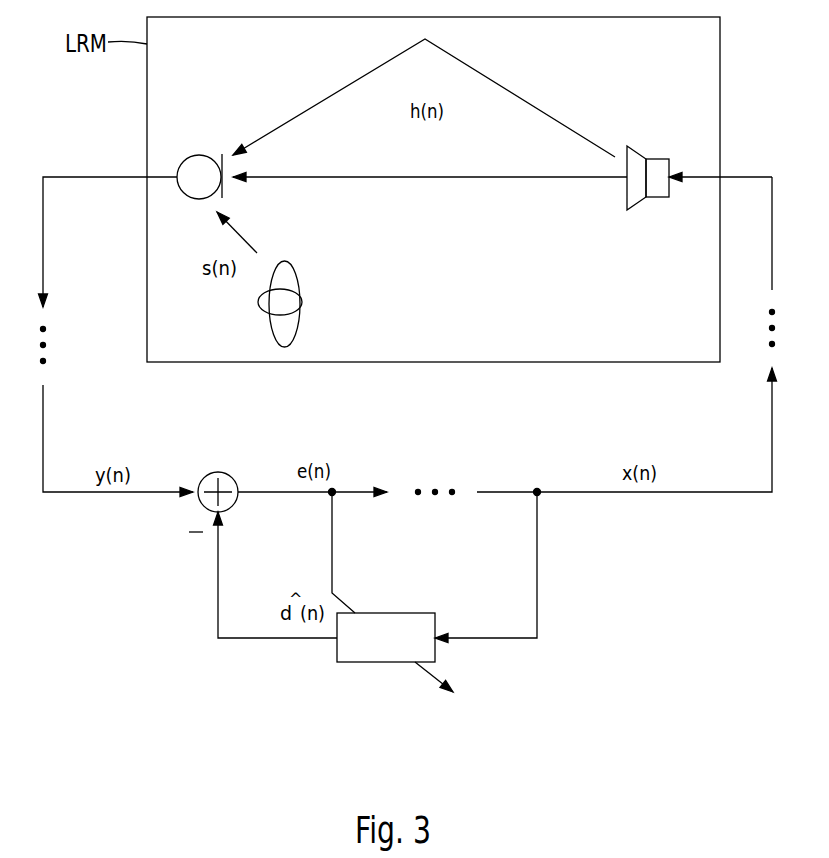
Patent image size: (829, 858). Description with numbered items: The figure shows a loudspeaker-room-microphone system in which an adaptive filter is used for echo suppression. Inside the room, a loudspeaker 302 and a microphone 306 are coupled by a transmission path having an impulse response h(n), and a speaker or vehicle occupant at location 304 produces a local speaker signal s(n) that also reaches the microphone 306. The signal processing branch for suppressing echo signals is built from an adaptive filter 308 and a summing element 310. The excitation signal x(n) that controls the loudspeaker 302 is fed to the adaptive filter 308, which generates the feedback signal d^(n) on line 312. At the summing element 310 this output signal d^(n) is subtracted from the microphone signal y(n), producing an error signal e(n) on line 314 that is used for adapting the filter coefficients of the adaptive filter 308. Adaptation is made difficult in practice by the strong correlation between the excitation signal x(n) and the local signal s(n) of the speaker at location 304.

The loudspeaker 302 is at (652, 159).
The location of the speaker 304 is at (287, 328).
The microphone 306 is at (197, 153).
The adaptive filter 308 is at (402, 612).
The summing element 310 is at (221, 471).
The line 312 is at (262, 632).
The line 314 is at (268, 489).